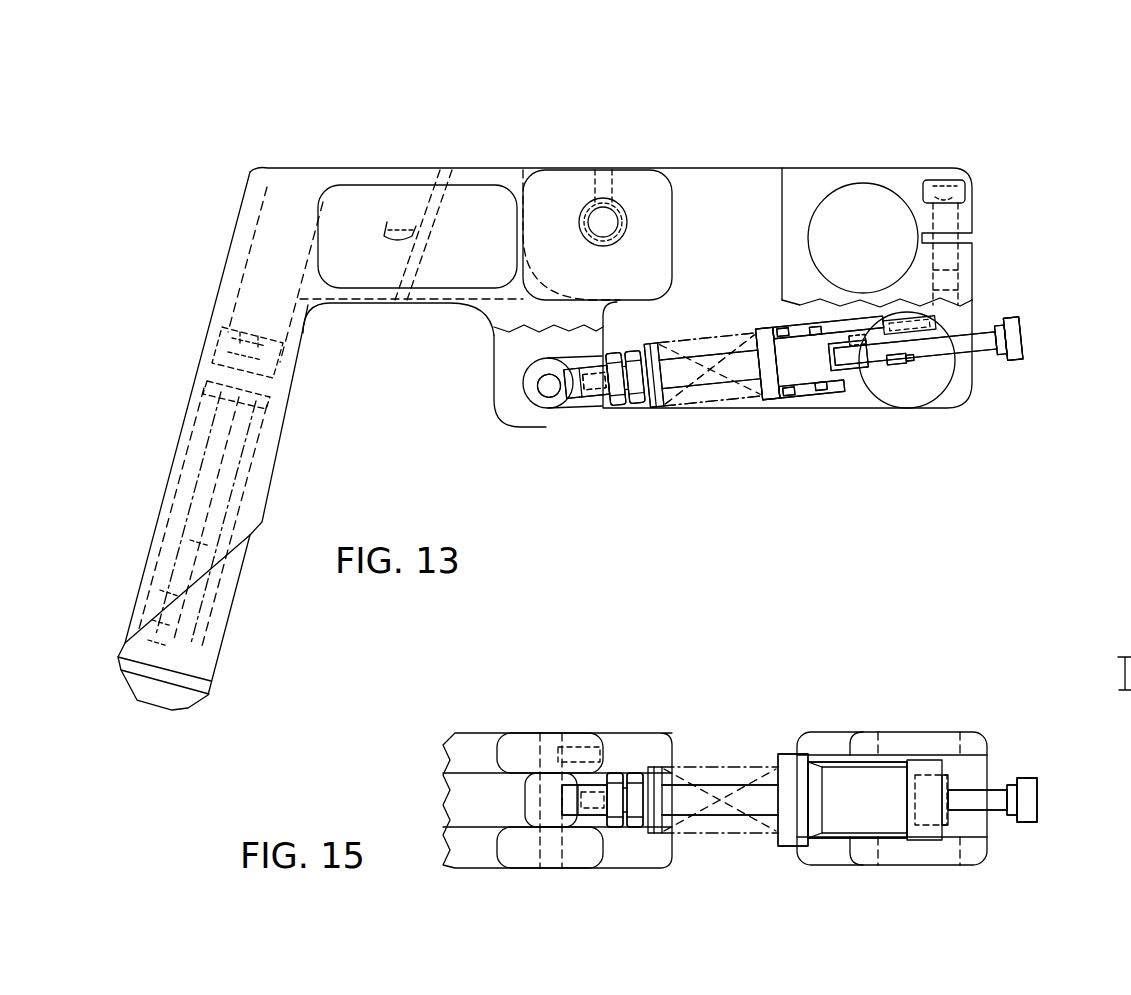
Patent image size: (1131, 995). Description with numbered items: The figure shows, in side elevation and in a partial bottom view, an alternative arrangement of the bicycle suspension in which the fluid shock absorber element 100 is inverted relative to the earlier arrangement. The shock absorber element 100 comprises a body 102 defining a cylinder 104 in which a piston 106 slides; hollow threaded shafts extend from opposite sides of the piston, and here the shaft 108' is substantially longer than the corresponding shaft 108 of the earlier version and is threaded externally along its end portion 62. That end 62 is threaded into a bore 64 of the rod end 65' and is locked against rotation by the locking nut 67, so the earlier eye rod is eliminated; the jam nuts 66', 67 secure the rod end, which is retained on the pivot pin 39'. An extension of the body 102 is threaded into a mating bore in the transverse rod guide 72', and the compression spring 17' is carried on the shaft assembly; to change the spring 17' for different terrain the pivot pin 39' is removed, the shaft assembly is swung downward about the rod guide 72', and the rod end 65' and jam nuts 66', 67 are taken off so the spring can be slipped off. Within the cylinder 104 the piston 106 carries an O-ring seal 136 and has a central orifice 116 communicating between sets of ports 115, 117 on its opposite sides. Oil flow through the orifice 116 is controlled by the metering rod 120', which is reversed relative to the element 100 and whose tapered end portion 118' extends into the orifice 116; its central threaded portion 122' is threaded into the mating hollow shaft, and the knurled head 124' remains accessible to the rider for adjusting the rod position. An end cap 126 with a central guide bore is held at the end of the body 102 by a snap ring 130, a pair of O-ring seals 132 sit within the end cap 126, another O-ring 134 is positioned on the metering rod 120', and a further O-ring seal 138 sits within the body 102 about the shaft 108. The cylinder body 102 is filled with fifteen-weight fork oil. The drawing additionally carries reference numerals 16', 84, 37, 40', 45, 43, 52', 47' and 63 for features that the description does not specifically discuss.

In FIG. 13, the handle 16' is at (220, 432).
In FIG. 13, the handle fastener 84 is at (257, 333).
In FIG. 13, the slot 37 is at (395, 207).
In FIG. 13, the body 40' is at (611, 202).
In FIG. 13, the bolt 45 is at (603, 170).
In FIG. 13, the bore 43 is at (620, 205).
In FIG. 13, the hole 52' is at (874, 182).
In FIG. 13, the screw 47' is at (959, 201).
In FIG. 13, the compression spring 17' is at (733, 372).
In FIG. 15, the compression spring 17' is at (602, 807).
In FIG. 13, the pivot pin 39' is at (494, 407).
In FIG. 13, the rod end 65' is at (532, 416).
In FIG. 15, the rod end 65' is at (491, 747).
In FIG. 13, the end portion of shaft 62 is at (596, 393).
In FIG. 13, the bore 64 is at (612, 395).
In FIG. 13, the locking nut 67 is at (627, 393).
In FIG. 15, the locking nut 67 is at (615, 772).
In FIG. 13, the jam nut 66' is at (613, 460).
In FIG. 15, the jam nut 66' is at (668, 757).
In FIG. 15, the pin 63 is at (603, 750).
In FIG. 13, the piston shaft 108' is at (709, 412).
In FIG. 15, the hollow threaded shaft 108 is at (720, 764).
In FIG. 13, the snap ring 130 is at (770, 330).
In FIG. 13, the O-ring seals 132 is at (783, 322).
In FIG. 13, the ports 115 is at (812, 345).
In FIG. 13, the central orifice 116 is at (822, 350).
In FIG. 13, the ports 117 is at (822, 392).
In FIG. 13, the tapered end portion 118' is at (886, 466).
In FIG. 13, the central threaded portion 122' is at (923, 416).
In FIG. 13, the knurled head 124' is at (1052, 322).
In FIG. 15, the knurled head 124' is at (1053, 760).
In FIG. 13, the metering rod 120' is at (942, 304).
In FIG. 15, the metering rod 120' is at (1033, 826).
In FIG. 13, the transverse rod guide 72' is at (957, 360).
In FIG. 15, the transverse rod guide 72' is at (919, 816).
In FIG. 13, the O-ring 134 is at (870, 372).
In FIG. 13, the O-ring seal 138 is at (845, 392).
In FIG. 13, the cylinder 104 is at (818, 400).
In FIG. 13, the body 102 is at (838, 398).
In FIG. 15, the body 102 is at (842, 777).
In FIG. 13, the shock absorber element 100 is at (833, 462).
In FIG. 15, the shock absorber element 100 is at (780, 722).
In FIG. 13, the O-ring seal 136 is at (825, 392).
In FIG. 13, the piston 106 is at (800, 420).
In FIG. 13, the end cap 126 is at (785, 420).